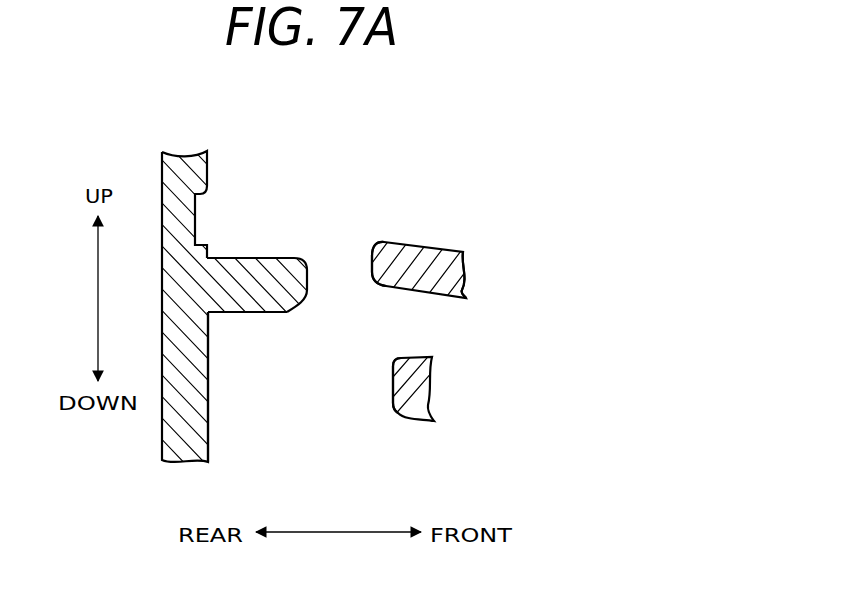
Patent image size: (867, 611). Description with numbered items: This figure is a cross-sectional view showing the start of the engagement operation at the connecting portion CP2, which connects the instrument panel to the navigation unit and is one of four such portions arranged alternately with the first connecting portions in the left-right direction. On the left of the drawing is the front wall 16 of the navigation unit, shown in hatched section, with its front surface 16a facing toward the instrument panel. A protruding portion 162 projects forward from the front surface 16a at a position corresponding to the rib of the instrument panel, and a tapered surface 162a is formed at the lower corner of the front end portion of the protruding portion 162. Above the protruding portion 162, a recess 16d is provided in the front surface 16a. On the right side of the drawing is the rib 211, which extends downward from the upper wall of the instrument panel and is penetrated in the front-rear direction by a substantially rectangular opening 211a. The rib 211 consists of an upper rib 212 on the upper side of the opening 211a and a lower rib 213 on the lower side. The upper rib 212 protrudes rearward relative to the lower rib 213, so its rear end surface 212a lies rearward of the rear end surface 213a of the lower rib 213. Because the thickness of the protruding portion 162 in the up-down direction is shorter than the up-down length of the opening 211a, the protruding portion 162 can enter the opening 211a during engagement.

The front wall 16 is at (240, 347).
The recess 16d is at (197, 214).
The front surface 16a is at (208, 437).
The protruding portion 162 is at (265, 257).
The tapered surface 162a is at (305, 307).
The connecting portion CP2 is at (333, 180).
The rib 211 is at (421, 331).
The upper rib 212 is at (433, 249).
The rear end surface 212a is at (373, 256).
The opening 211a is at (437, 297).
The lower rib 213 is at (418, 422).
The rear end surface 213a is at (392, 387).